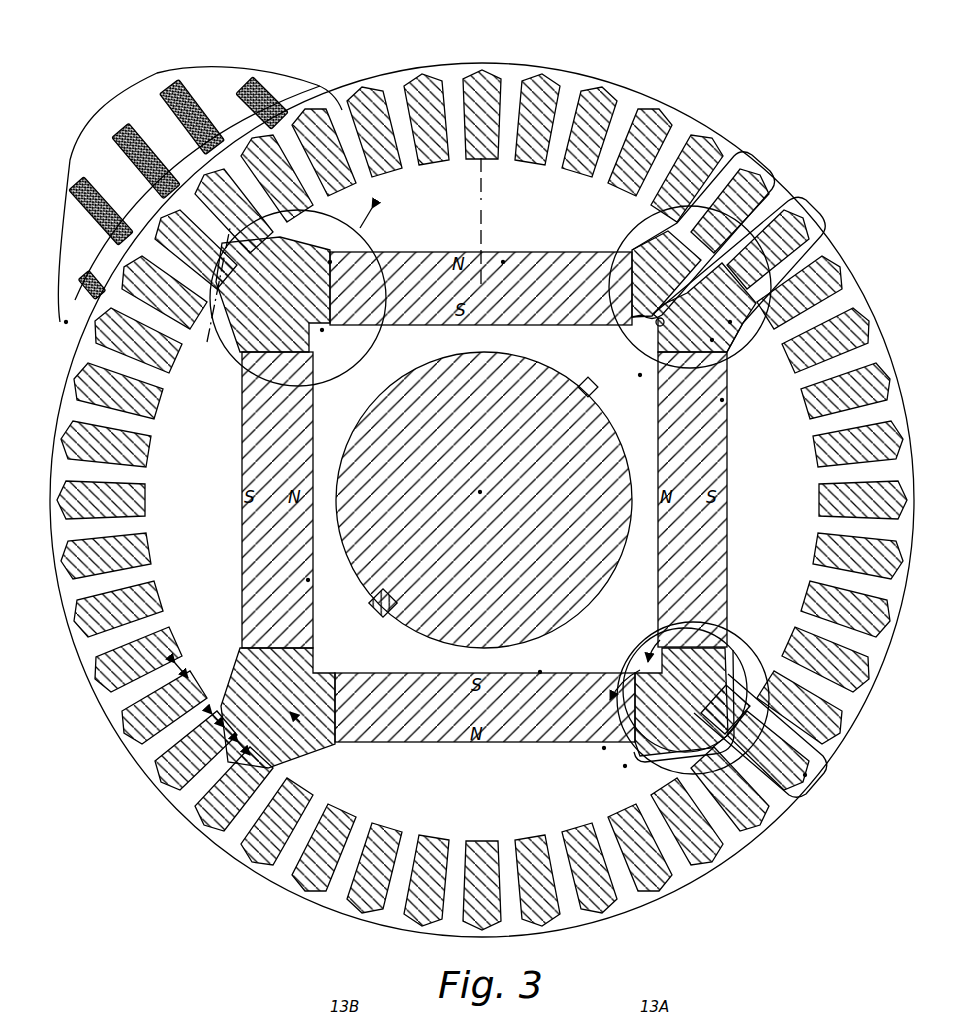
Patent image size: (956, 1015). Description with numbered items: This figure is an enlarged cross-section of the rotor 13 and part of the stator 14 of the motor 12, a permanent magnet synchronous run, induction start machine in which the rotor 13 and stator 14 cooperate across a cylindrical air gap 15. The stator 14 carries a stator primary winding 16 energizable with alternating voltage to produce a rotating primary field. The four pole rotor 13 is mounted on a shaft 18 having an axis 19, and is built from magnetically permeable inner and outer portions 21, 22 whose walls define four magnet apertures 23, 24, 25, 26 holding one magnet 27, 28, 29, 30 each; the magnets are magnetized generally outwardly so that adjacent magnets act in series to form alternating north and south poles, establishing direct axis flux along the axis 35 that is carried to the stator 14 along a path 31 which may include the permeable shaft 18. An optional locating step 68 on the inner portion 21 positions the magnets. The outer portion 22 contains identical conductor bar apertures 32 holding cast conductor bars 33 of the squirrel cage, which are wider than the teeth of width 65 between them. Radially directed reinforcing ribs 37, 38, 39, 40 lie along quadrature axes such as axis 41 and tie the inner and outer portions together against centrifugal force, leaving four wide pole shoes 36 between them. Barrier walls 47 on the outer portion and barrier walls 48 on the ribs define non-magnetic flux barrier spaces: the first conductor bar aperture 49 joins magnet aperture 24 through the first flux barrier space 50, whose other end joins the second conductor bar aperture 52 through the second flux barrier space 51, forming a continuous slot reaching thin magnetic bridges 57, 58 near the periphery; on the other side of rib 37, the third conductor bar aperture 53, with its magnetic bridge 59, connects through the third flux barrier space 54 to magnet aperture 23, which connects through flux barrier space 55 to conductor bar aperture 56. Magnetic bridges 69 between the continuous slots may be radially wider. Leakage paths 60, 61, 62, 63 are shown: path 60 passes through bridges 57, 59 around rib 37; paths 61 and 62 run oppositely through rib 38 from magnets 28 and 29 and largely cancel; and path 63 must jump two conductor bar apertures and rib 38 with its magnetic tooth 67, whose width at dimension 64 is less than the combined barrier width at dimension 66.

The motor 12 is at (298, 62).
The rotor 13 is at (638, 100).
The stator 14 is at (162, 82).
The air gap 15 is at (66, 322).
The stator primary winding 16 is at (122, 130).
The shaft 18 is at (544, 539).
The axis 19 is at (480, 492).
The inner portion 21 is at (521, 497).
The outer portion 22 is at (576, 211).
The magnet aperture 23 is at (503, 262).
The magnet aperture 24 is at (722, 400).
The magnet aperture 25 is at (540, 672).
The magnet aperture 26 is at (308, 580).
The magnet 27 is at (576, 301).
The magnet 28 is at (706, 462).
The magnet 29 is at (542, 723).
The magnet 30 is at (284, 559).
The path 31 is at (374, 238).
The conductor bar apertures 32 is at (558, 85).
The conductor bars 33 is at (545, 74).
The direct axis 35 is at (484, 198).
The pole shoes 36 is at (388, 88).
The reinforcing rib 37 is at (682, 230).
The reinforcing rib 38 is at (700, 700).
The reinforcing rib 39 is at (302, 745).
The reinforcing rib 40 is at (313, 262).
The quadrature axis 41 is at (210, 292).
The barrier walls 47 is at (730, 322).
The barrier walls 48 is at (660, 326).
The first conductor bar aperture 49 is at (818, 218).
The first flux barrier space 50 is at (712, 340).
The second flux barrier space 51 is at (733, 652).
The second conductor bar aperture 52 is at (795, 782).
The third conductor bar aperture 53 is at (722, 152).
The third flux barrier space 54 is at (647, 262).
The flux barrier space 55 is at (330, 262).
The conductor bar aperture 56 is at (298, 224).
The magnetic bridge 57 is at (796, 206).
The magnetic bridge 58 is at (805, 775).
The magnetic bridge 59 is at (758, 172).
The first leakage path 60 is at (640, 375).
The second leakage path 61 is at (705, 626).
The third leakage path 62 is at (625, 766).
The fourth leakage path 63 is at (604, 748).
The rib width dimension 64 is at (300, 722).
The magnetic tooth width 65 is at (183, 668).
The minimum aperture width dimension 66 is at (216, 716).
The magnetic tooth 67 is at (766, 818).
The locating step 68 is at (322, 330).
The magnetic bridges 69 is at (846, 272).